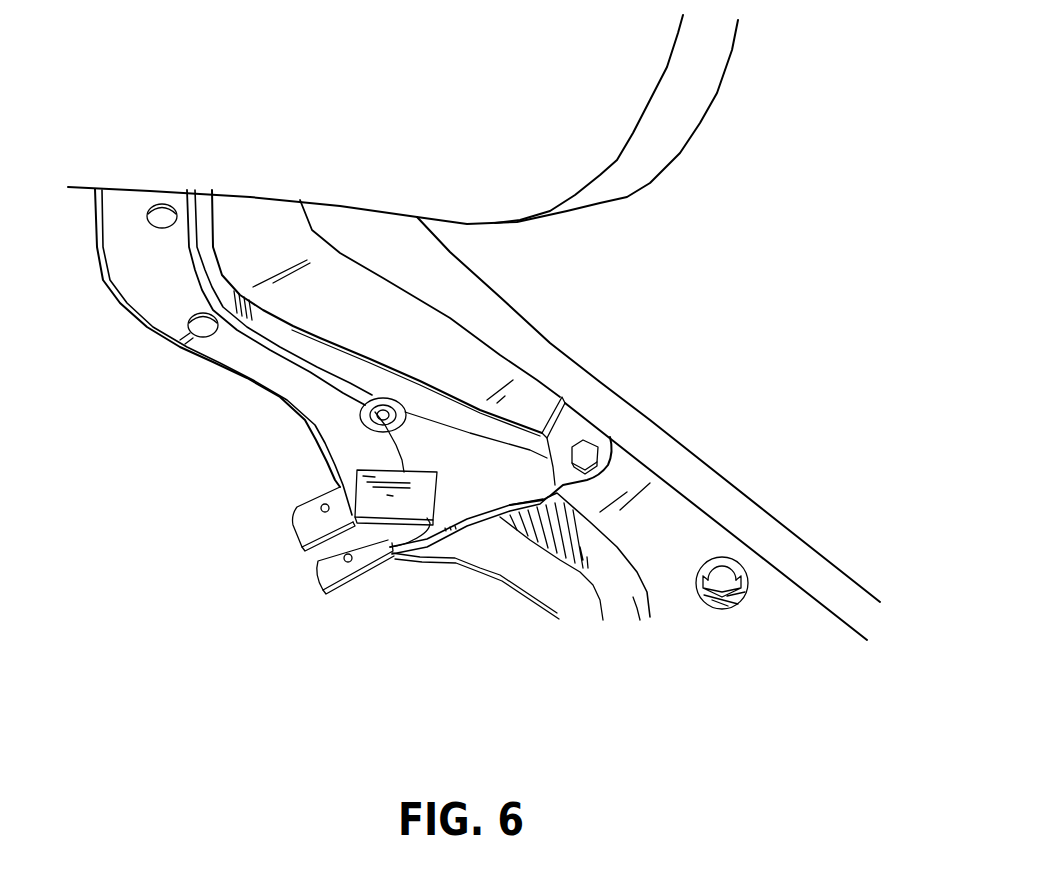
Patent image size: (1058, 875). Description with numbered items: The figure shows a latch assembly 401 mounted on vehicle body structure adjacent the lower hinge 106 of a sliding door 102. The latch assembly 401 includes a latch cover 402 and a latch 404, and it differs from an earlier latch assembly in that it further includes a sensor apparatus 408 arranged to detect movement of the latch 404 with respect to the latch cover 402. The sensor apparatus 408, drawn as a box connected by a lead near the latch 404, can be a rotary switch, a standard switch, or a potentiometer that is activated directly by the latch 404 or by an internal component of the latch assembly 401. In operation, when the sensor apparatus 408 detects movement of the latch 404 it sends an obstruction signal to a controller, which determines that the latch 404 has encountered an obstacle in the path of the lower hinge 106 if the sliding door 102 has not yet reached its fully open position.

The sliding door 102 is at (615, 119).
The lower hinge 106 is at (623, 609).
The latch assembly 401 is at (431, 347).
The latch cover 402 is at (520, 562).
The latch 404 is at (362, 561).
The sensor apparatus 408 is at (326, 485).